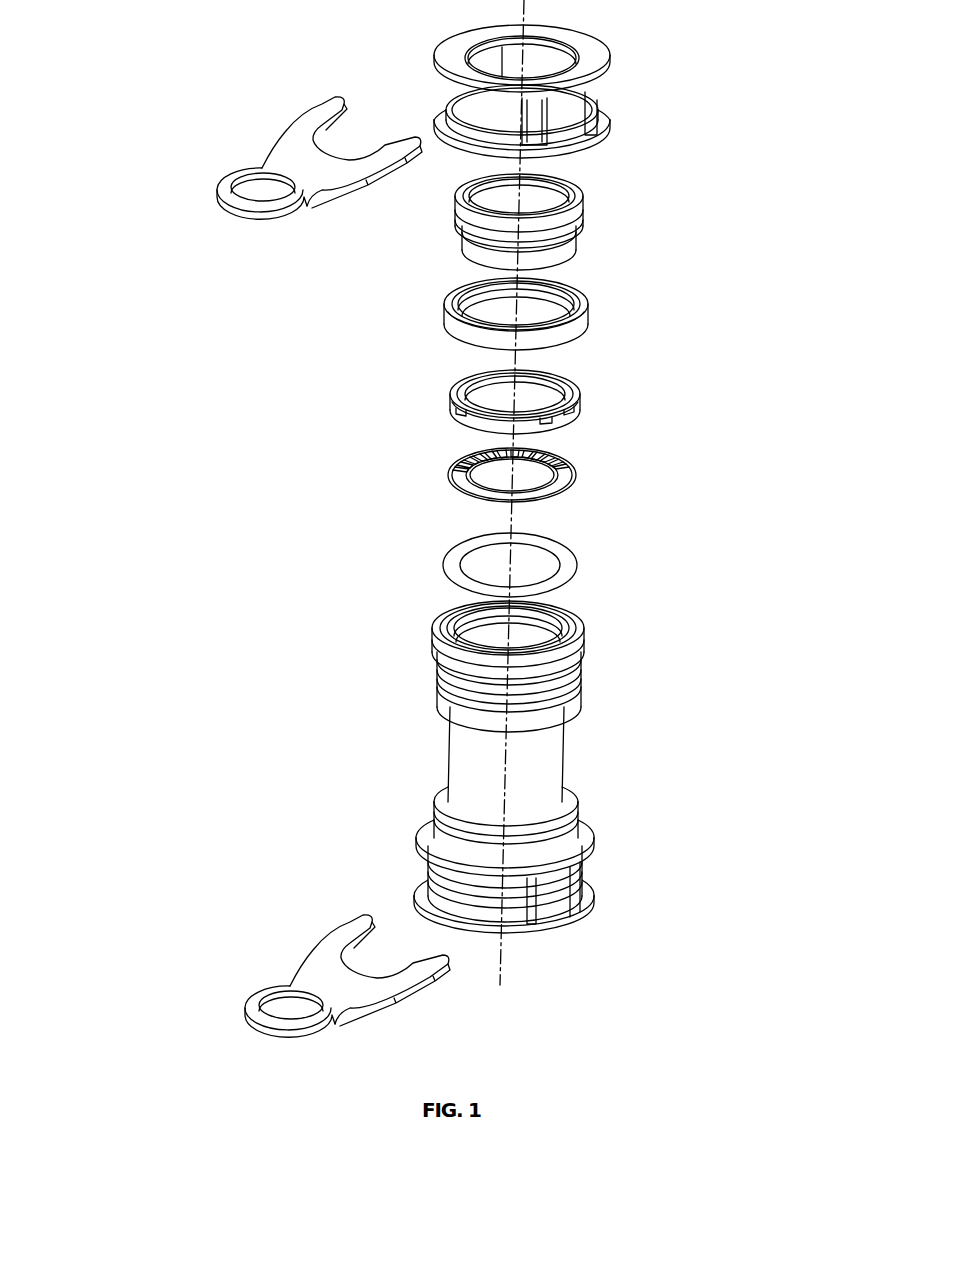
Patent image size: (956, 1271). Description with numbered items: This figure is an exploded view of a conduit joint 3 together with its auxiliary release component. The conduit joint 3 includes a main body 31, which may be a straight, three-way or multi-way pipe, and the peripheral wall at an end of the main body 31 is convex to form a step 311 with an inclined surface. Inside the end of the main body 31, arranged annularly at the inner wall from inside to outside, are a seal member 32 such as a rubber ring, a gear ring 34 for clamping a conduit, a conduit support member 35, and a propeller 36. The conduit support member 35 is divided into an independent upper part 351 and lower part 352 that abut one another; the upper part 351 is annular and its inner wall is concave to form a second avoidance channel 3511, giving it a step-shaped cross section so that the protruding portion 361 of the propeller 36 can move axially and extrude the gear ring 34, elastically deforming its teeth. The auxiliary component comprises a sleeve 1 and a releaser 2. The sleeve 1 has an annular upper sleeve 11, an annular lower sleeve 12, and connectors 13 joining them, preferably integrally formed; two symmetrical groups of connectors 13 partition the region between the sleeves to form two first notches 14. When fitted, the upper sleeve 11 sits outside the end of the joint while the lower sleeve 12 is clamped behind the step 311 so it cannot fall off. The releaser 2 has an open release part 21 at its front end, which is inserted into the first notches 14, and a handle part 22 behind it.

The sleeve 1 is at (745, 35).
The upper sleeve 11 is at (597, 57).
The lower sleeve 12 is at (563, 125).
The connector 13 is at (585, 137).
The first notch 14 is at (525, 117).
The releaser 2 is at (100, 178).
The release part 21 is at (303, 120).
The handle part 22 is at (217, 192).
The conduit joint 3 is at (765, 212).
The main body 31 is at (548, 760).
The step 311 is at (587, 648).
The seal member 32 is at (567, 559).
The gear ring 34 is at (577, 471).
The conduit support member 35 is at (577, 332).
The upper part 351 is at (453, 330).
The second avoidance channel 3511 is at (577, 295).
The lower part 352 is at (470, 422).
The propeller 36 is at (577, 219).
The protruding portion 361 is at (587, 233).